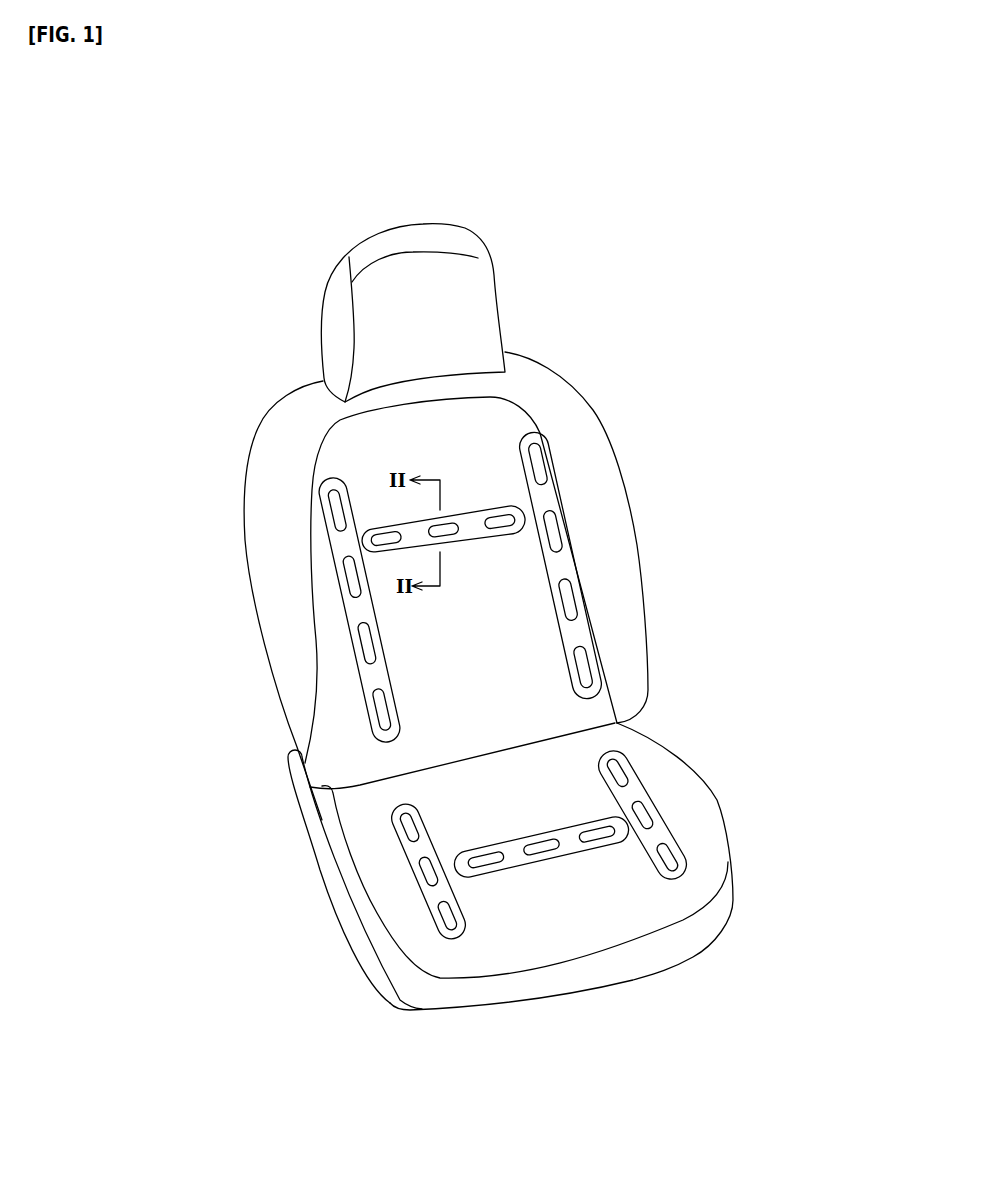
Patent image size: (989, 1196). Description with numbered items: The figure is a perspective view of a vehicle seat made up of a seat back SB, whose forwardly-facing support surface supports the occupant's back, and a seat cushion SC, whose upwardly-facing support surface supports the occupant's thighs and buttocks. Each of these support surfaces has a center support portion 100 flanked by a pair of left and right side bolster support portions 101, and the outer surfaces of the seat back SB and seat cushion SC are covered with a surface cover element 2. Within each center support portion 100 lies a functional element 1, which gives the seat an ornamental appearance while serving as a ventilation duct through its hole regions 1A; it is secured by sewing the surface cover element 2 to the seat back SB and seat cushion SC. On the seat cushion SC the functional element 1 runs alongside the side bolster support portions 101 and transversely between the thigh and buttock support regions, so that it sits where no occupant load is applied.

The functional element 1 is at (560, 567).
The hole region 1A is at (532, 458).
The surface cover element 2 is at (513, 623).
The center support portion 100 is at (511, 664).
The side bolster support portion 101 is at (303, 642).
The seat back SB is at (640, 493).
The seat cushion SC is at (717, 788).